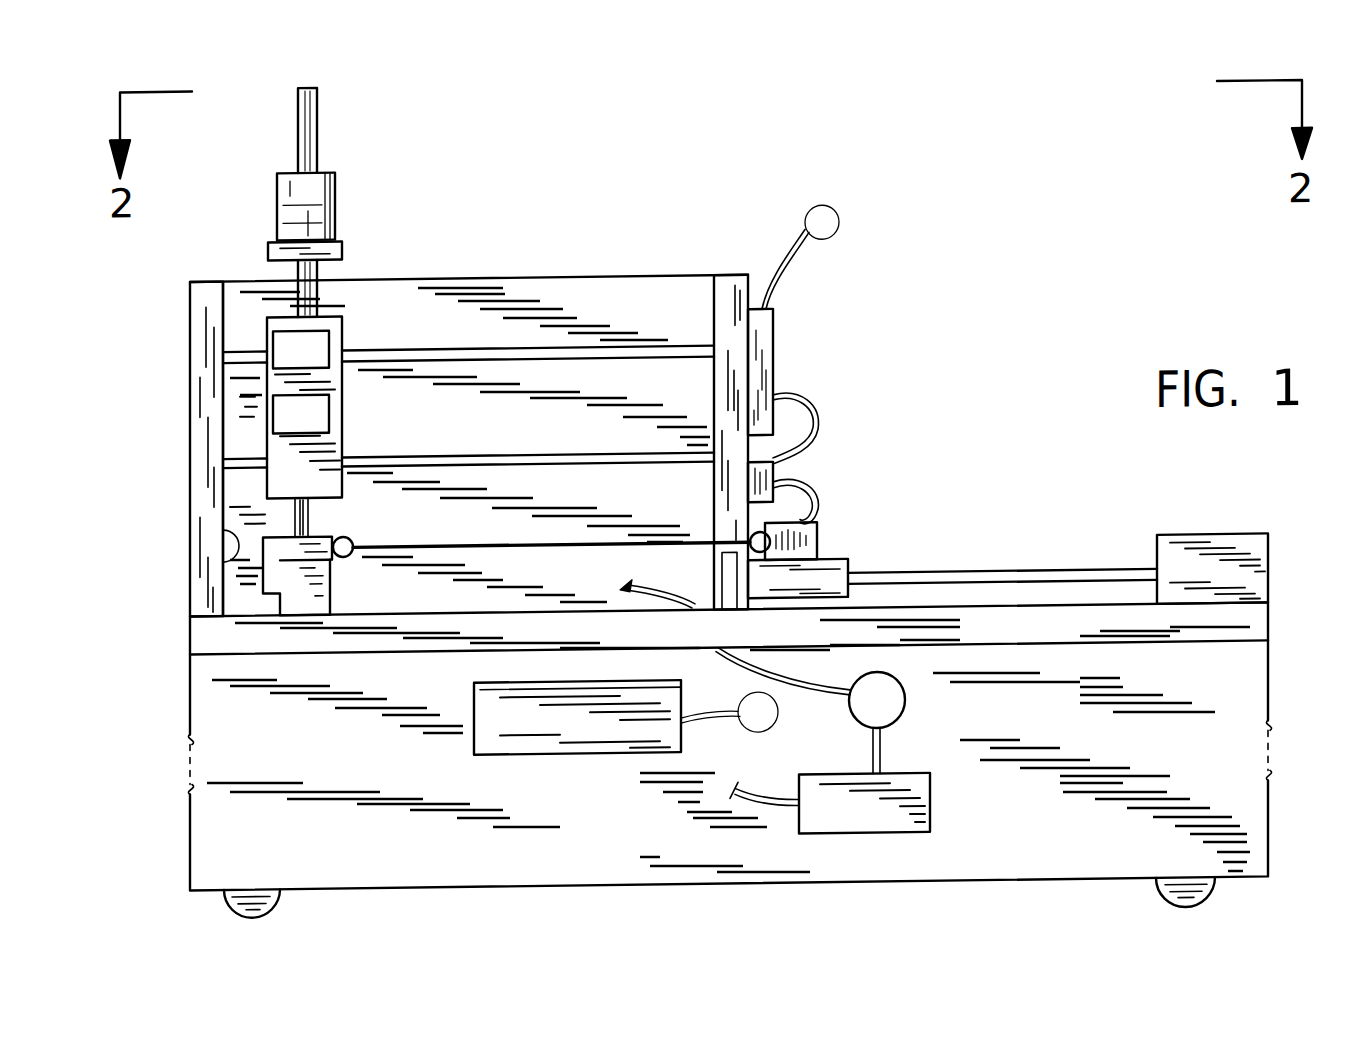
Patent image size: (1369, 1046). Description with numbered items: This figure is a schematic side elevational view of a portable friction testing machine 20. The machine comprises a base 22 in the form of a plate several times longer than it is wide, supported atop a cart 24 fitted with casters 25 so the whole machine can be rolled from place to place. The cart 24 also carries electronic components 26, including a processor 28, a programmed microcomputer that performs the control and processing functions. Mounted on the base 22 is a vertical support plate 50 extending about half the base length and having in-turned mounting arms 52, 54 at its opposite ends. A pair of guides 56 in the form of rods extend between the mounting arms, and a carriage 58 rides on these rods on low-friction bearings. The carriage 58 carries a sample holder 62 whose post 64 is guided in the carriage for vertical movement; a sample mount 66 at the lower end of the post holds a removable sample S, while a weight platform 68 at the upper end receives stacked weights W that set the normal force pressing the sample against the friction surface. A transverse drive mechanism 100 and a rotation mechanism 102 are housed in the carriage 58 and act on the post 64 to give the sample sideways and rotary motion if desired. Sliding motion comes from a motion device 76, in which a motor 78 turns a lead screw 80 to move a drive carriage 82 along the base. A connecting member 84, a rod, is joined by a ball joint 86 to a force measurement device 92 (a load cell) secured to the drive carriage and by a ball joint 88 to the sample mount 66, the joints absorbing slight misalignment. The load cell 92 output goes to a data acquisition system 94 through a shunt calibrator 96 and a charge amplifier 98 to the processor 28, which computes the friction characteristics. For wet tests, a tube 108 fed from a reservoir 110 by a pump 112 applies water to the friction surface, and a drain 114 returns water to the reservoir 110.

The portable friction testing machine 20 is at (646, 218).
The base 22 is at (1262, 657).
The cart 24 is at (1258, 699).
The casters 25 is at (1160, 900).
The electronic components 26 is at (448, 690).
The processor 28 is at (474, 726).
The vertical support plate 50 is at (508, 290).
The mounting arm 52 is at (714, 305).
The mounting arm 54 is at (225, 535).
The guides 56 is at (445, 464).
The carriage 58 is at (267, 437).
The sample holder 62 is at (338, 296).
The post 64 is at (298, 306).
The sample mount 66 is at (335, 543).
The weight platform 68 is at (342, 254).
The motion device 76 is at (1058, 538).
The motor 78 is at (1220, 550).
The lead screw 80 is at (1030, 586).
The drive carriage 82 is at (848, 584).
The connecting member 84 is at (605, 548).
The ball joint 86 is at (750, 548).
The ball joint 88 is at (350, 561).
The force measurement device 92 is at (817, 543).
The data acquisition system 94 is at (808, 334).
The shunt calibrator 96 is at (777, 499).
The charge amplifier 98 is at (773, 371).
The transverse drive mechanism 100 is at (329, 347).
The rotation mechanism 102 is at (330, 421).
The tube 108 is at (645, 586).
The reservoir 110 is at (930, 812).
The pump 112 is at (905, 712).
The drain 114 is at (767, 813).
The weights W is at (277, 199).
The sample S is at (330, 585).